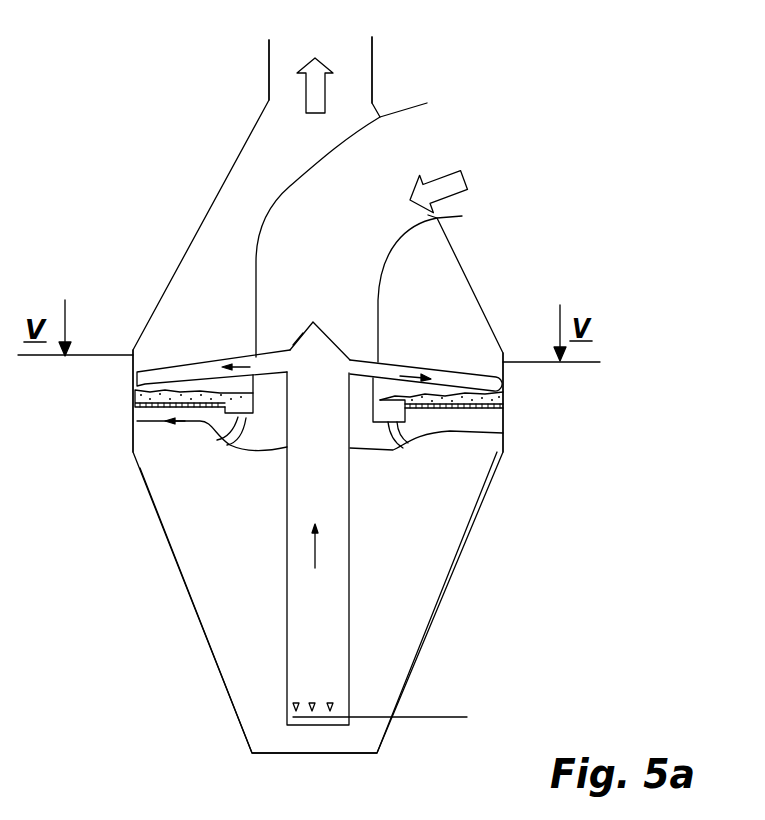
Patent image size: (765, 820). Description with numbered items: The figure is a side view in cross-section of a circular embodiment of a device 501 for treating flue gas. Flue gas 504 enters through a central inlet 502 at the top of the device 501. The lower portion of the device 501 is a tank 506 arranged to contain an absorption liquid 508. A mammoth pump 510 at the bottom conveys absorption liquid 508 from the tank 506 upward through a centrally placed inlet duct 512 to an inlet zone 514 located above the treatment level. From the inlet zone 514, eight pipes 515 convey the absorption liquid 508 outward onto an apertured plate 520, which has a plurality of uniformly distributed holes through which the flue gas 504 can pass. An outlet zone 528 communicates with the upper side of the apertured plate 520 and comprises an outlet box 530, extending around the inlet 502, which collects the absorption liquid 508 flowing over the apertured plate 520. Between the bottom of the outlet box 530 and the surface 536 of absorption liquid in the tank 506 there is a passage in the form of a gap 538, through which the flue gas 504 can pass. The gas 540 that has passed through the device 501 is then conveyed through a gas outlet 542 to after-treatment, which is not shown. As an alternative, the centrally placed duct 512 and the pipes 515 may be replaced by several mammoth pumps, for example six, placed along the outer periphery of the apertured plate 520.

The device 501 is at (118, 288).
The central inlet 502 is at (400, 110).
The flue gas 504 is at (450, 199).
The tank 506 is at (180, 583).
The absorption liquid 508 is at (222, 595).
The mammoth pump 510 is at (427, 717).
The inlet duct 512 is at (350, 568).
The inlet zone 514 is at (445, 371).
The pipes 515 is at (198, 360).
The apertured plate 520 is at (137, 410).
The outlet zone 528 is at (250, 414).
The outlet box 530 is at (373, 414).
The surface of absorption liquid 536 is at (203, 422).
The gap 538 is at (393, 447).
The gas 540 is at (302, 85).
The gas outlet 542 is at (268, 82).